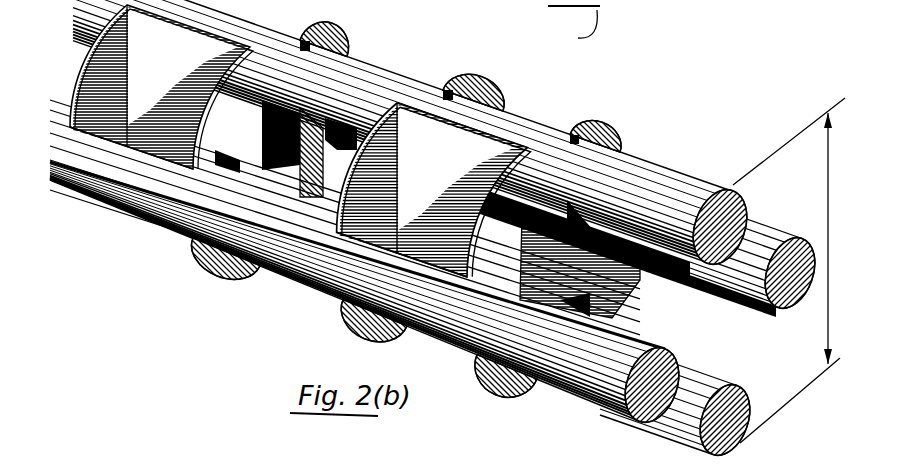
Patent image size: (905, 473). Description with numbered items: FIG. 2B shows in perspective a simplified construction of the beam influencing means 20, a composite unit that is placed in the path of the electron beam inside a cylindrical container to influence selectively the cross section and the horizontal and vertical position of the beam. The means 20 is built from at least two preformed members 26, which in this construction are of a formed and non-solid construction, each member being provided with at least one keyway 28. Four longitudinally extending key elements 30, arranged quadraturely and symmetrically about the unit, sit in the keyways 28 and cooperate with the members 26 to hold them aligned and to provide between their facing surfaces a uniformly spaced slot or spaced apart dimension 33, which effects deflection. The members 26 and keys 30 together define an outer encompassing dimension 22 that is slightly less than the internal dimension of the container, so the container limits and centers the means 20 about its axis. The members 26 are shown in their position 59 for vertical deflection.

The beam influencing means 20 is at (452, 236).
The outer encompassing dimension 22 is at (822, 173).
The preformed members 26 is at (317, 30).
The keyway 28 is at (93, 120).
The key elements 30 is at (736, 245).
The spaced apart dimension 33 is at (273, 157).
The vertical deflection position 59 is at (563, 100).